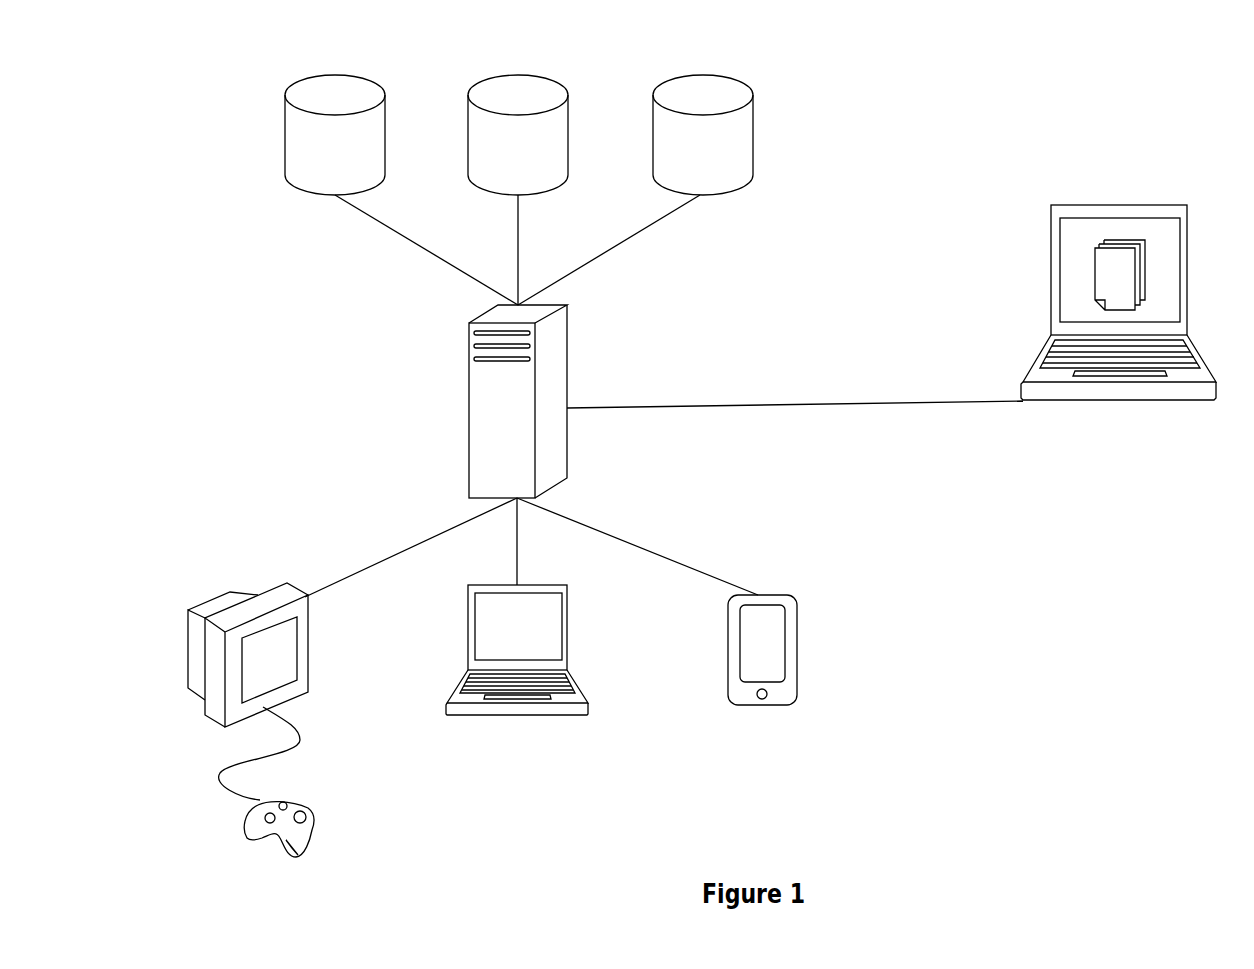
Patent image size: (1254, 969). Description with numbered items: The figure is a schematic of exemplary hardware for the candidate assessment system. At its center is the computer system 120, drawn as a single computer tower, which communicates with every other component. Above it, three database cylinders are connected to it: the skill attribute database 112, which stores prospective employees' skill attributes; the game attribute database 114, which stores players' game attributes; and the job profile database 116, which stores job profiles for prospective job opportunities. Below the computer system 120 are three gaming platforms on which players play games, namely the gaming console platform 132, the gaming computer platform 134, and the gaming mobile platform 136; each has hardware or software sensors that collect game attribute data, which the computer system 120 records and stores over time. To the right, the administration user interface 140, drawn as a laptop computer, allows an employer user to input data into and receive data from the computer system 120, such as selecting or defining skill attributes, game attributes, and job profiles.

The skill attribute database 112 is at (335, 123).
The game attribute database 114 is at (518, 123).
The job profile database 116 is at (703, 123).
The computer system 120 is at (495, 401).
The gaming console platform 132 is at (251, 730).
The gaming computer platform 134 is at (517, 665).
The gaming mobile platform 136 is at (762, 665).
The administration user interface 140 is at (1118, 288).